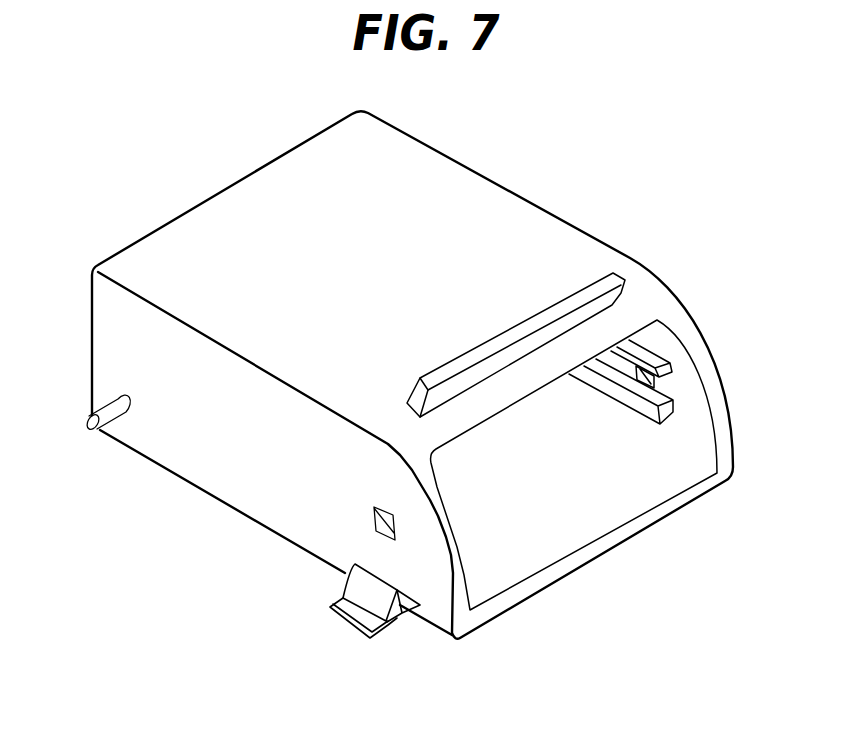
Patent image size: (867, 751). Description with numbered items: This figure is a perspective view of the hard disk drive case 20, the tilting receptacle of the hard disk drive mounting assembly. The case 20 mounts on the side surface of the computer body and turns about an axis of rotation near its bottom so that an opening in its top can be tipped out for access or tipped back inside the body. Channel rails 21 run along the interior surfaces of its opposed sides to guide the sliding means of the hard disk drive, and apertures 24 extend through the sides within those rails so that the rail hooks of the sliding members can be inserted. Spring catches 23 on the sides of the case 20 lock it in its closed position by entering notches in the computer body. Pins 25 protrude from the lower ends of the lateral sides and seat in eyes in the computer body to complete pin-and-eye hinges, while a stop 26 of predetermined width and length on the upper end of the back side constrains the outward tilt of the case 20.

The hard disk drive case 20 is at (510, 207).
The channel rails 21 is at (660, 355).
The spring catches 23 is at (365, 590).
The apertures 24 is at (386, 518).
The pins 25 is at (107, 407).
The stop 26 is at (610, 280).